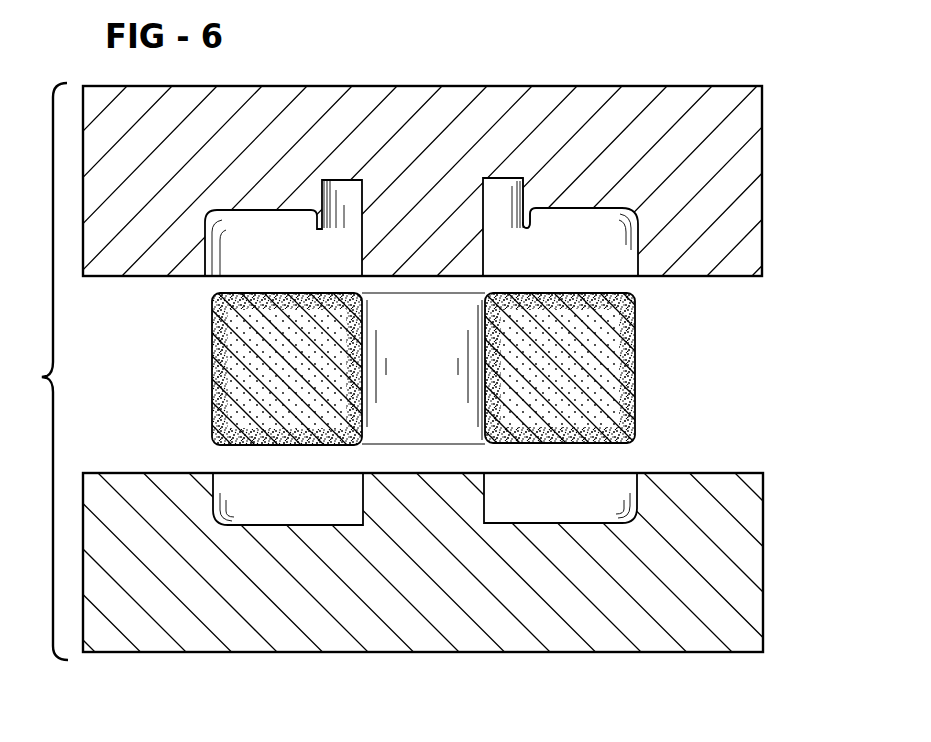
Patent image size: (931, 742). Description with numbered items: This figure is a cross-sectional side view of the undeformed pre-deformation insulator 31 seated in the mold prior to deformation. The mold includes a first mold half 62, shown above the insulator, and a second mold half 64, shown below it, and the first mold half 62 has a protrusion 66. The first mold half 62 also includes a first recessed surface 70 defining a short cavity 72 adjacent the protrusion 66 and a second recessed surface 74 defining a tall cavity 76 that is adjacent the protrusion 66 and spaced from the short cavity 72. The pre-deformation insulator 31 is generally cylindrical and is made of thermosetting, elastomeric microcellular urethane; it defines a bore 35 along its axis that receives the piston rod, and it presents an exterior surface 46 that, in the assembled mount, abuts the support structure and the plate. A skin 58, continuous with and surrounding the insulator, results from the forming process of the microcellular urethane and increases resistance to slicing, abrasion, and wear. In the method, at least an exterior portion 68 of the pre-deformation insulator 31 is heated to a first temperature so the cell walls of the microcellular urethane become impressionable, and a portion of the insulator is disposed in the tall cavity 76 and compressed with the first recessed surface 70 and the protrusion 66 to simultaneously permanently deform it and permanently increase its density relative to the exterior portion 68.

The first mold half 62 is at (747, 118).
The second mold half 64 is at (750, 517).
The protrusion 66 is at (533, 224).
The first recessed surface 70 is at (492, 184).
The short cavity 72 is at (512, 210).
The second recessed surface 74 is at (607, 212).
The tall cavity 76 is at (577, 221).
The pre-deformation insulator 31 is at (216, 371).
The bore 35 is at (374, 320).
The exterior surface 46 is at (628, 308).
The skin 58 is at (635, 365).
The exterior portion 68 is at (213, 424).